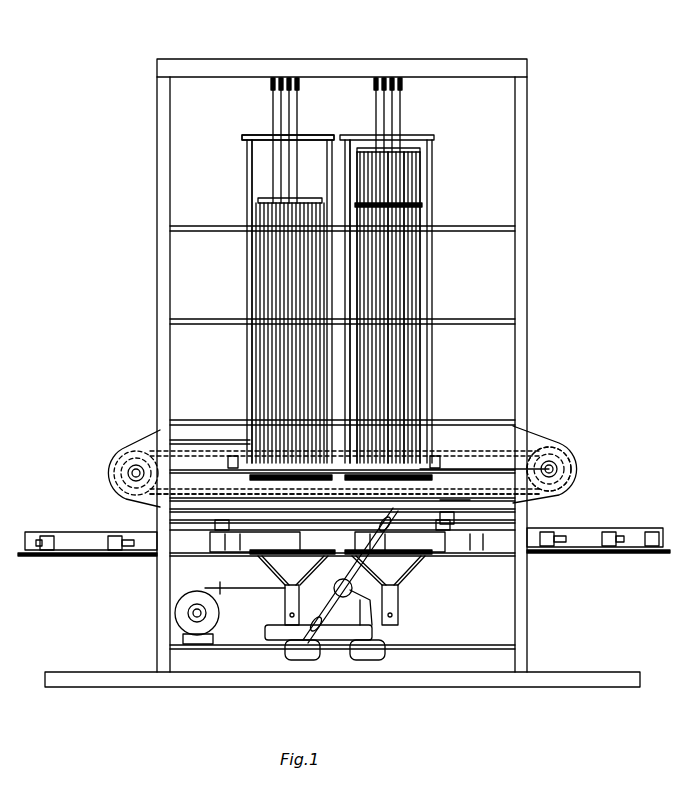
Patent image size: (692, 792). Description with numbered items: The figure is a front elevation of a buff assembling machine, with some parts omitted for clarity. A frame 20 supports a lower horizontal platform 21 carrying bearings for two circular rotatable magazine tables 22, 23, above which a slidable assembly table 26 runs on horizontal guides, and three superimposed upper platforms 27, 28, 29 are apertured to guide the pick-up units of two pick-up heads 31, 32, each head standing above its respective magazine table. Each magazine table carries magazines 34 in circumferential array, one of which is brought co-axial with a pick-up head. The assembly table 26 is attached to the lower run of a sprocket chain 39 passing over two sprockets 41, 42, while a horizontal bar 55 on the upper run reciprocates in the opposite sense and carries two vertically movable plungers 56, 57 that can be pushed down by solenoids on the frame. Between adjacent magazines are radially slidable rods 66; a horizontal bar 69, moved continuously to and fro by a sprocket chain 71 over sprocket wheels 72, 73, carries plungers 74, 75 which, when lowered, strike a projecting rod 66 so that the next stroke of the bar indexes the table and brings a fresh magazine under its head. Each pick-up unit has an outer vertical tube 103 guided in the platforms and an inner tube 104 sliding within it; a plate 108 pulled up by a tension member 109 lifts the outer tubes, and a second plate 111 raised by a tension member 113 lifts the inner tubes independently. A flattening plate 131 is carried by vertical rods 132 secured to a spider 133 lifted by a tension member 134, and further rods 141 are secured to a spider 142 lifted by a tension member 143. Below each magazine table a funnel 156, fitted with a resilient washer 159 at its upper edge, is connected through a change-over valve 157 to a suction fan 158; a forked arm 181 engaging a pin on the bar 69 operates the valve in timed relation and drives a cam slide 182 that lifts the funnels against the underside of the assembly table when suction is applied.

The frame 20 is at (527, 267).
The lower horizontal platform 21 is at (500, 556).
The magazine table 22 is at (62, 556).
The magazine table 23 is at (628, 553).
The assembly table 26 is at (470, 470).
The upper platform 27 is at (500, 420).
The upper platform 28 is at (505, 324).
The upper platform 29 is at (510, 226).
The pick-up head 31 is at (245, 378).
The pick-up head 32 is at (438, 388).
The magazine 34 is at (70, 532).
The sprocket chain 39 is at (195, 440).
The sprocket 41 is at (130, 446).
The sprocket 42 is at (568, 458).
The horizontal bar 55 is at (515, 440).
The plunger 56 is at (228, 458).
The plunger 57 is at (440, 466).
The radially slidable rod 66 is at (134, 550).
The horizontal bar 69 is at (520, 512).
The sprocket chain 71 is at (228, 440).
The sprocket wheel 72 is at (110, 474).
The sprocket wheel 73 is at (575, 477).
The plunger 74 is at (230, 565).
The plunger 75 is at (430, 560).
The outer vertical tube 103 is at (396, 266).
The inner tube 104 is at (410, 188).
The plate 108 is at (420, 205).
The tension member 109 is at (376, 105).
The second plate 111 is at (420, 168).
The tension member 113 is at (384, 121).
The flattening plate 131 is at (160, 492).
The vertical rod 132 is at (410, 290).
The spider 133 is at (258, 137).
The tension member 134 is at (400, 85).
The rod 141 is at (480, 312).
The spider 142 is at (252, 150).
The tension member 143 is at (400, 110).
The funnel 156 is at (285, 600).
The change-over valve 157 is at (352, 588).
The suction fan 158 is at (202, 636).
The resilient washer 159 is at (300, 590).
The arm 181 is at (390, 590).
The cam slide 182 is at (345, 640).